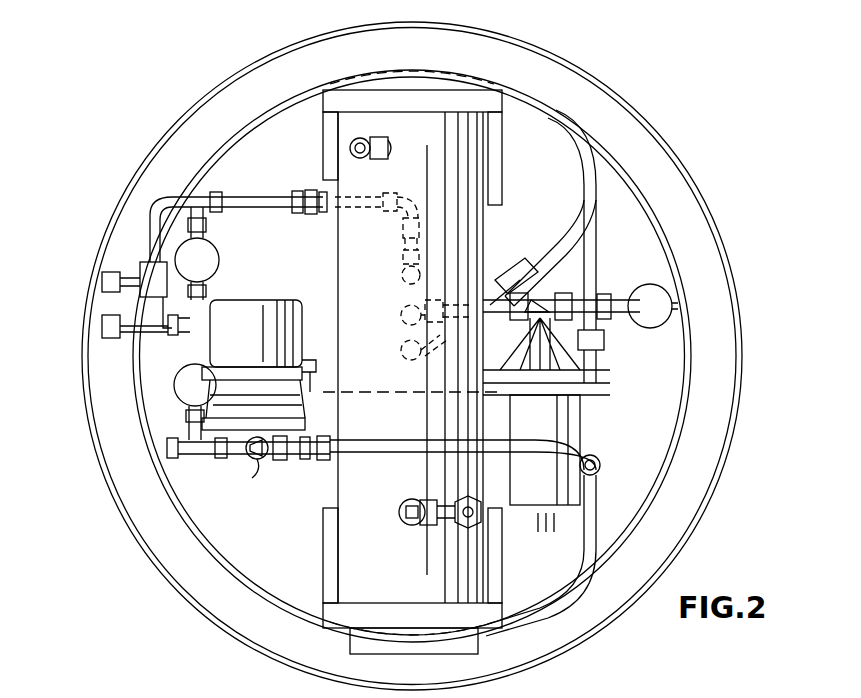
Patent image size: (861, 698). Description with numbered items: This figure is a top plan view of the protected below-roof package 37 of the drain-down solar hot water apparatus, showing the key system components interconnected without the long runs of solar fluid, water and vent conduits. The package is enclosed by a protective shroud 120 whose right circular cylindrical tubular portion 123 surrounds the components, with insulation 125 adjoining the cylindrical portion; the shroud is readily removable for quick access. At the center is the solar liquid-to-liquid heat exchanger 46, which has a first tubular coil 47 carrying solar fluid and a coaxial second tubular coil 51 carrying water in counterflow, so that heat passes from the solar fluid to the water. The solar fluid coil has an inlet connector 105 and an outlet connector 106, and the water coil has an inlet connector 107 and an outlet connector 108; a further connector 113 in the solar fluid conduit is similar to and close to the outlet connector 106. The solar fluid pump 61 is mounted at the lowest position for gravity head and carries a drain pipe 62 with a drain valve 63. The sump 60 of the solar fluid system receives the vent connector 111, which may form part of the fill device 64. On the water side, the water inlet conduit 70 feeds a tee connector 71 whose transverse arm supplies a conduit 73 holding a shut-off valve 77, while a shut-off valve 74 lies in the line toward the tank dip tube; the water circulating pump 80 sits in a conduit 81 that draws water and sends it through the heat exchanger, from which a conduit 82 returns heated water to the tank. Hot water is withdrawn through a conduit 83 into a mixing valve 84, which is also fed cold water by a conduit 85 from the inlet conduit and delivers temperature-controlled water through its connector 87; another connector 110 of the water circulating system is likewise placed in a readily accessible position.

The protected below-roof package 37 is at (700, 87).
The solar liquid-to-liquid heat exchanger 46 is at (700, 406).
The first tubular coil 47 is at (600, 236).
The second tubular coil 51 is at (386, 440).
The sump 60 is at (342, 486).
The solar fluid pump 61 is at (582, 418).
The drain pipe 62 is at (606, 295).
The drain valve 63 is at (675, 300).
The fill device 64 is at (406, 526).
The water inlet conduit 70 is at (178, 330).
The tee connector 71 is at (185, 342).
The conduit 73 is at (266, 199).
The shut-off valve 74 is at (178, 392).
The shut-off valve 77 is at (220, 262).
The water circulating pump 80 is at (262, 302).
The conduit 81 is at (253, 462).
The conduit 82 is at (510, 300).
The conduit 83 is at (152, 226).
The mixing valve 84 is at (102, 268).
The conduit 85 is at (150, 322).
The connector 87 is at (160, 302).
The inlet connector 105 is at (606, 344).
The outlet connector 106 is at (600, 465).
The inlet connector 107 is at (322, 460).
The outlet connector 108 is at (532, 262).
The connector 110 is at (102, 330).
The vent connector 111 is at (546, 522).
The connector 113 is at (349, 149).
The protective shroud 120 is at (688, 170).
The cylindrical tubular portion 123 is at (735, 496).
The insulation 125 is at (200, 126).